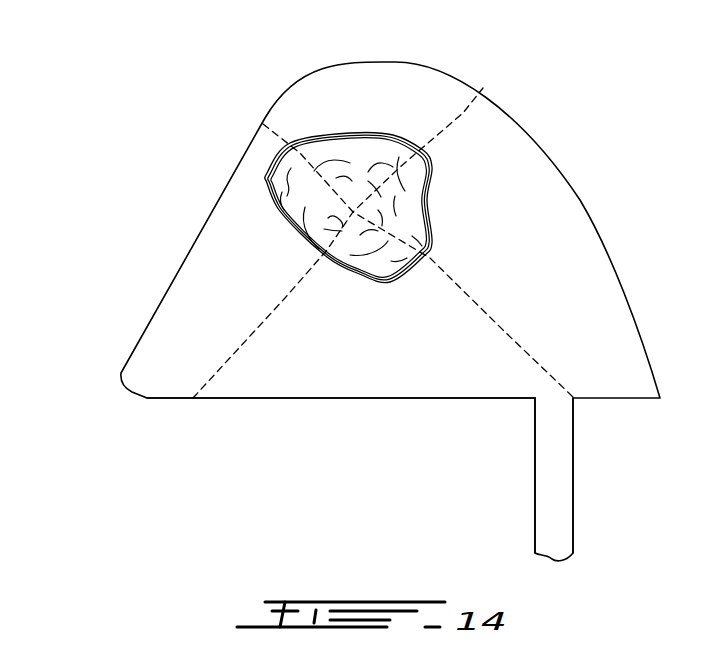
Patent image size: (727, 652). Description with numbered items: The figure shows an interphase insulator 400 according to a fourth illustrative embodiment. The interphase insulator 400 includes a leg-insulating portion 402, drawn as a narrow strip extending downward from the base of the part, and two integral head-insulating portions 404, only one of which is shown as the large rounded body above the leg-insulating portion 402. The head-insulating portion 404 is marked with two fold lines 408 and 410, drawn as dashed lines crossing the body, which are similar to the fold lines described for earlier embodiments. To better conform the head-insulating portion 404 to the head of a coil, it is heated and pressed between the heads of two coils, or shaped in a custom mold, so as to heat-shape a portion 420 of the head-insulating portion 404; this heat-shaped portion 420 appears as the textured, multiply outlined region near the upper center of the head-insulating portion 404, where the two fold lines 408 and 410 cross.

The interphase insulator 400 is at (147, 162).
The leg-insulating portion 402 is at (558, 497).
The head-insulating portion 404 is at (343, 400).
The fold line 408 is at (497, 318).
The fold line 410 is at (252, 332).
The heat-shaped portion 420 is at (352, 136).